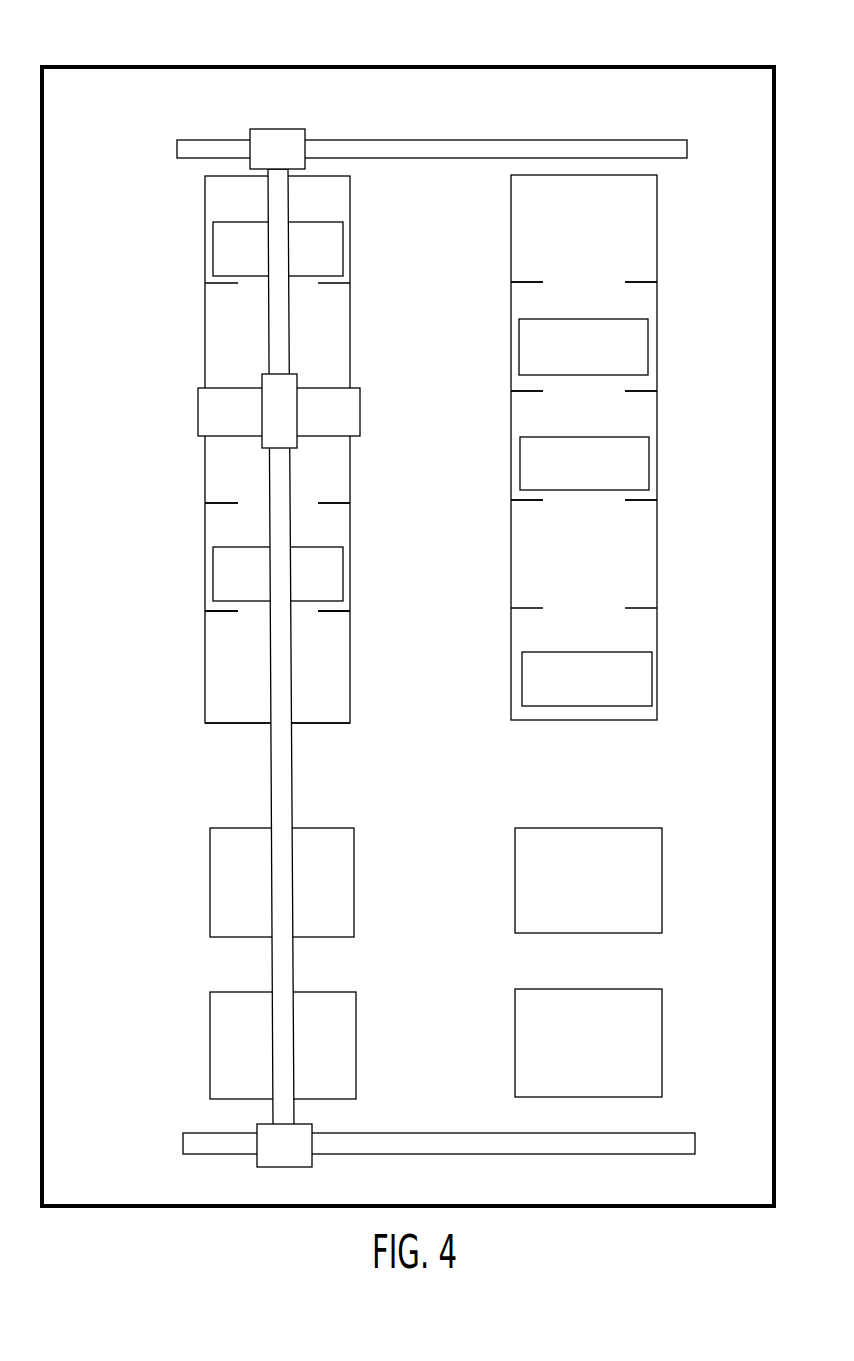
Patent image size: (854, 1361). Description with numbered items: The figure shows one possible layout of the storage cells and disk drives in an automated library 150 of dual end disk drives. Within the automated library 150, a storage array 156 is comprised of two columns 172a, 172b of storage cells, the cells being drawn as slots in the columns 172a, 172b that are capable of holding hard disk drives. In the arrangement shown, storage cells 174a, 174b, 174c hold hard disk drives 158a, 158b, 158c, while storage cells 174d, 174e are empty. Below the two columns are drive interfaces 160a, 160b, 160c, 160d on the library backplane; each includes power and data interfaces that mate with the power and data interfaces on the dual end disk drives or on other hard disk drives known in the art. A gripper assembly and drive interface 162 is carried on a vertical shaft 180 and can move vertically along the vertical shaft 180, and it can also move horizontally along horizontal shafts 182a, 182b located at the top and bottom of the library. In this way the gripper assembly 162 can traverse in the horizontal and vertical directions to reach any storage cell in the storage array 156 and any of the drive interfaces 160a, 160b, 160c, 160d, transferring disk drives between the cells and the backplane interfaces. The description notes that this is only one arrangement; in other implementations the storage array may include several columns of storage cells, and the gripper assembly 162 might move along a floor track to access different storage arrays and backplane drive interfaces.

The automated library 150 is at (86, 65).
The storage array 156 is at (258, 449).
The hard disk drive 158a is at (343, 571).
The hard disk drive 158b is at (648, 350).
The hard disk drive 158c is at (649, 462).
The drive interface on the library backplane 160a is at (210, 882).
The drive interface on the library backplane 160b is at (210, 1022).
The drive interface on the library backplane 160c is at (515, 880).
The drive interface on the library backplane 160d is at (515, 1044).
The gripper assembly and drive interface 162 is at (198, 413).
The column of storage cells 172a is at (350, 241).
The column of storage cells 172b is at (657, 250).
The storage cell 174a is at (347, 536).
The storage cell 174b is at (650, 304).
The storage cell 174c is at (650, 423).
The storage cell 174d is at (650, 547).
The storage cell 174e is at (347, 652).
The vertical shaft 180 is at (268, 478).
The horizontal shaft 182a is at (200, 138).
The horizontal shaft 182b is at (183, 1145).